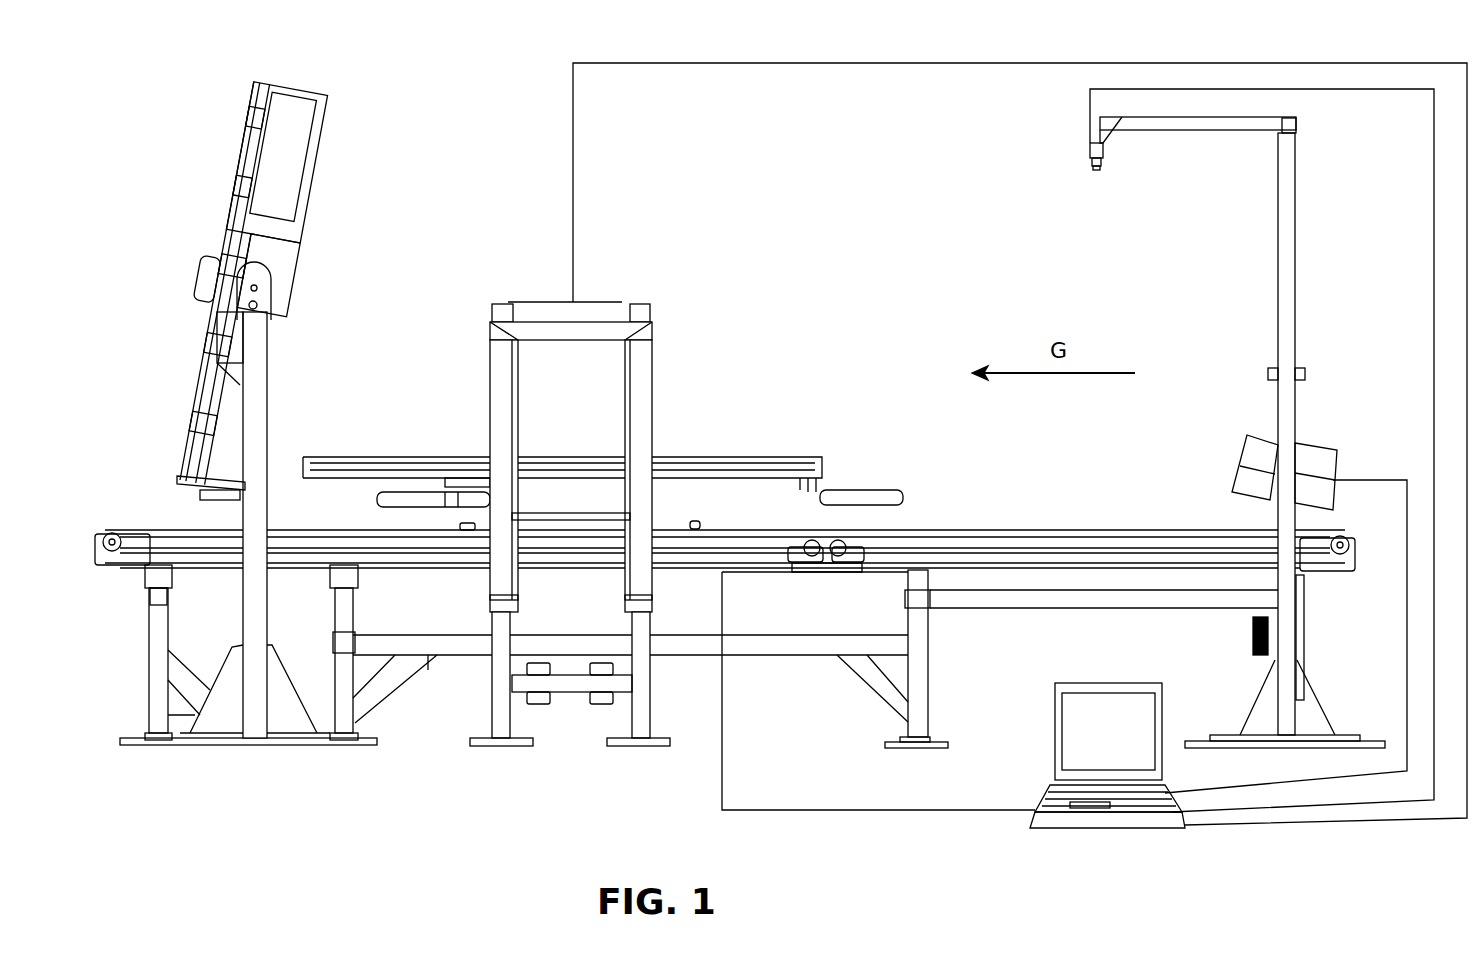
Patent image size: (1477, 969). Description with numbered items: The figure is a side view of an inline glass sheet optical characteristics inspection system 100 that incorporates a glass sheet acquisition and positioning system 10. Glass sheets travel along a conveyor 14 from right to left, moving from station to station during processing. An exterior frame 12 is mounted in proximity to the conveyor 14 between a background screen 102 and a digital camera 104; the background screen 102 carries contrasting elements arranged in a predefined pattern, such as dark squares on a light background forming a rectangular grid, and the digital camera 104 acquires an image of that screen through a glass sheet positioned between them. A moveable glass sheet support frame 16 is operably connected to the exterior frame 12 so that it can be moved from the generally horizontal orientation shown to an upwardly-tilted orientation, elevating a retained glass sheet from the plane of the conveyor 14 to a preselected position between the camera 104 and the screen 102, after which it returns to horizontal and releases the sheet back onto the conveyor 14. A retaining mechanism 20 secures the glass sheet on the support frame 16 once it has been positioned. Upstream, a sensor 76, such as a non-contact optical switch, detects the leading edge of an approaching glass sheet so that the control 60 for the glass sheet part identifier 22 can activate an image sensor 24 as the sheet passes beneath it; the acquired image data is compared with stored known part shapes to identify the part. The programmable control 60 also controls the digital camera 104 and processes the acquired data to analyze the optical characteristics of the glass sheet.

The inline glass sheet optical characteristics inspection system 100 is at (430, 88).
The glass sheet acquisition and positioning system 10 is at (599, 455).
The exterior frame 12 is at (648, 383).
The conveyor 14 is at (1088, 530).
The glass sheet support frame 16 is at (790, 460).
The retaining mechanism 20 is at (830, 490).
The glass sheet part identifier 22 is at (1088, 138).
The image sensor 24 is at (1103, 147).
The programmable control 60 is at (1060, 688).
The sensor 76 is at (1252, 635).
The background screen 102 is at (322, 215).
The digital camera 104 is at (1310, 440).